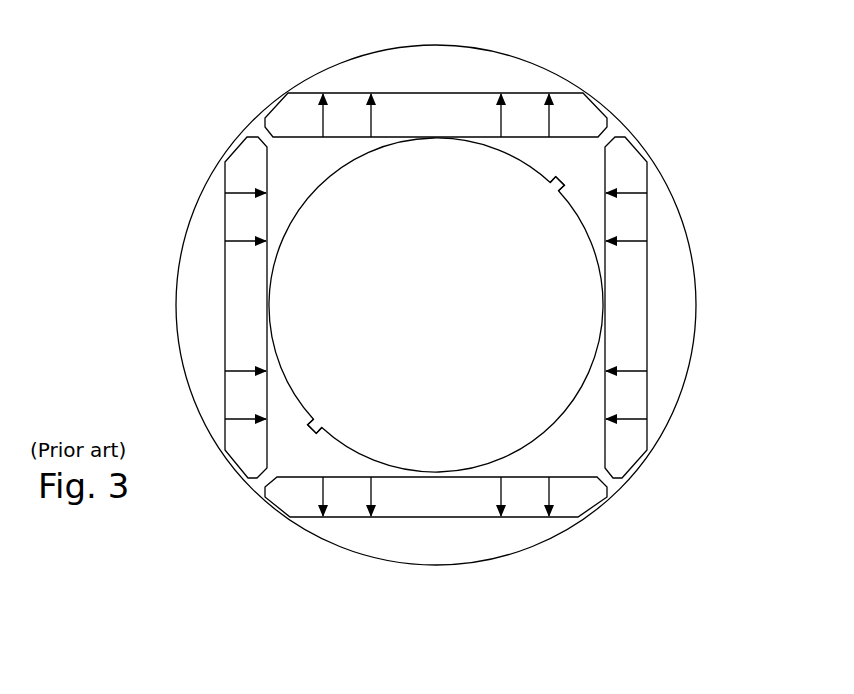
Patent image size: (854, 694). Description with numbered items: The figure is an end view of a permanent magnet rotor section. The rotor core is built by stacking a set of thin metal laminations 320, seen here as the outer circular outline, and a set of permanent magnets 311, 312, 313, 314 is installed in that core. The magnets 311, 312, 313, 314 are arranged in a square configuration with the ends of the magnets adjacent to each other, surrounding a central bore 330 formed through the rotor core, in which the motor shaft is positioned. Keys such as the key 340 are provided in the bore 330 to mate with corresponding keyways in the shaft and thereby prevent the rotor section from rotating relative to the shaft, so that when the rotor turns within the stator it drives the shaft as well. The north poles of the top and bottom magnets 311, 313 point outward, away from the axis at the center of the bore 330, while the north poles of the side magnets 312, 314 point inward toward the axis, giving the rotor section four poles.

The permanent magnet 311 is at (332, 92).
The permanent magnet 312 is at (648, 413).
The permanent magnet 313 is at (545, 518).
The permanent magnet 314 is at (226, 188).
The thin metal laminations 320 is at (541, 70).
The bore 330 is at (436, 305).
The key 340 is at (548, 186).